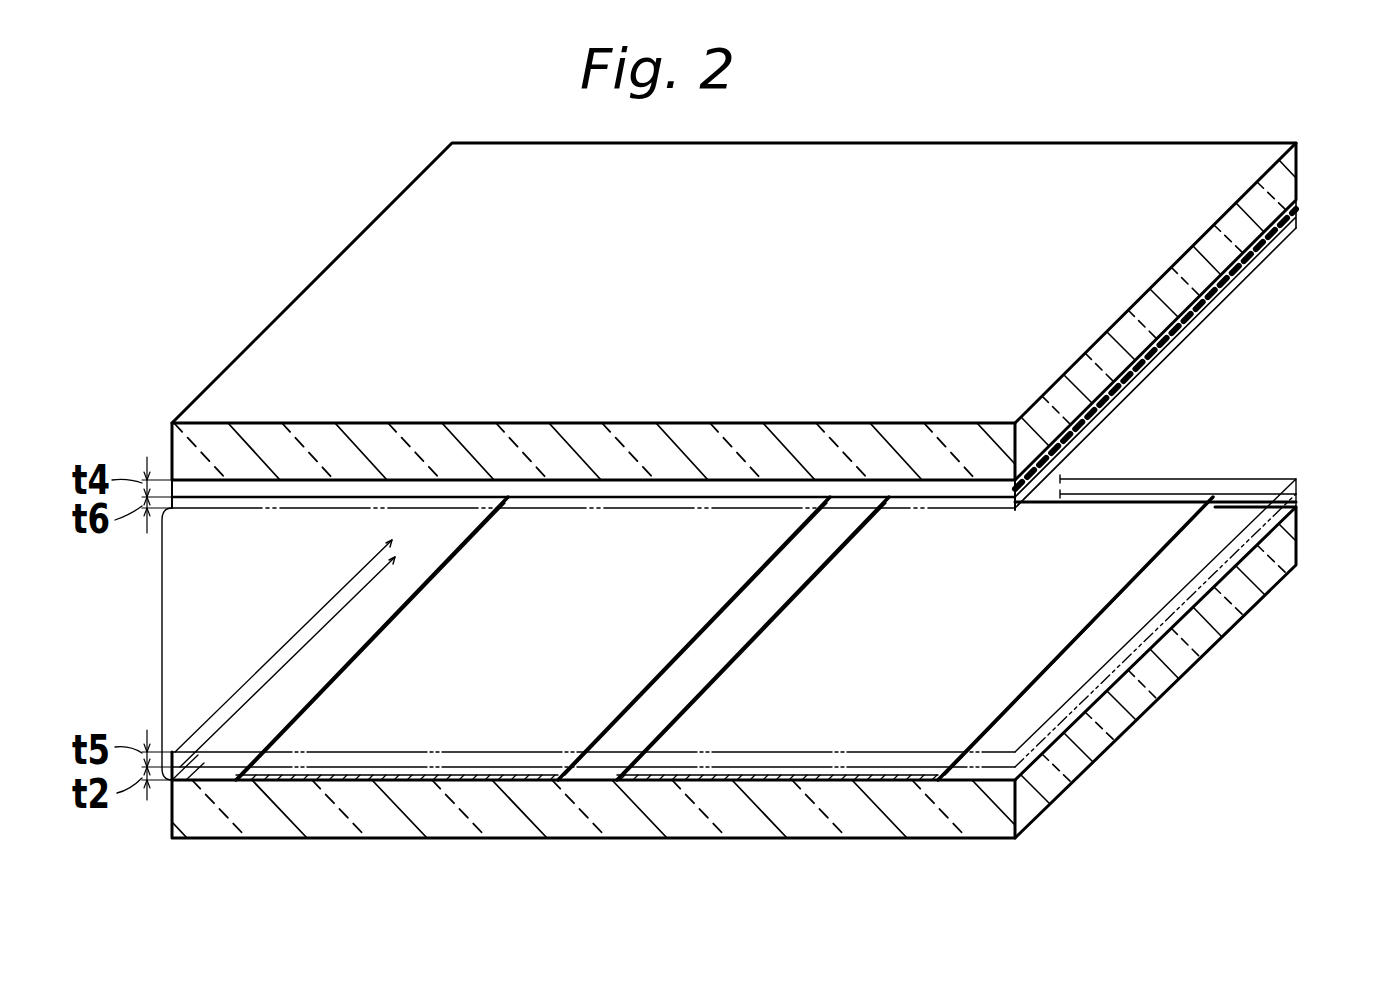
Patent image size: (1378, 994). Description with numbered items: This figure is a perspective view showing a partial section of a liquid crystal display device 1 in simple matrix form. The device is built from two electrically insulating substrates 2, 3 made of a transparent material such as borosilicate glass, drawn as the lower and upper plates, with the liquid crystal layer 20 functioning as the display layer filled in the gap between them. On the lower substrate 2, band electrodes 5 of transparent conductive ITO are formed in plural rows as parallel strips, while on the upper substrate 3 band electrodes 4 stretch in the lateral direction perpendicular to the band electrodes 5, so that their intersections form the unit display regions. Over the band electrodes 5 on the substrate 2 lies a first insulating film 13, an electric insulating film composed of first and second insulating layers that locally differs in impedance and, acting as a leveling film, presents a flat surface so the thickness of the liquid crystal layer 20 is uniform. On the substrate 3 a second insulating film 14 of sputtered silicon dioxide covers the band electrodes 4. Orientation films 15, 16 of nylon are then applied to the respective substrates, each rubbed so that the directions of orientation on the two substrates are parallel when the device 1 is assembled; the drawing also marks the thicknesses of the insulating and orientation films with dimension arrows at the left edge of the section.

The liquid crystal display device 1 is at (1178, 799).
The substrate 2 is at (800, 815).
The substrate 3 is at (1287, 186).
The band electrodes 4 is at (1172, 344).
The band electrodes 5 is at (678, 740).
The first insulating film 13 is at (1300, 498).
The second insulating film 14 is at (213, 494).
The orientation film 15 is at (1177, 486).
The orientation film 16 is at (313, 505).
The liquid crystal layer 20 is at (162, 628).